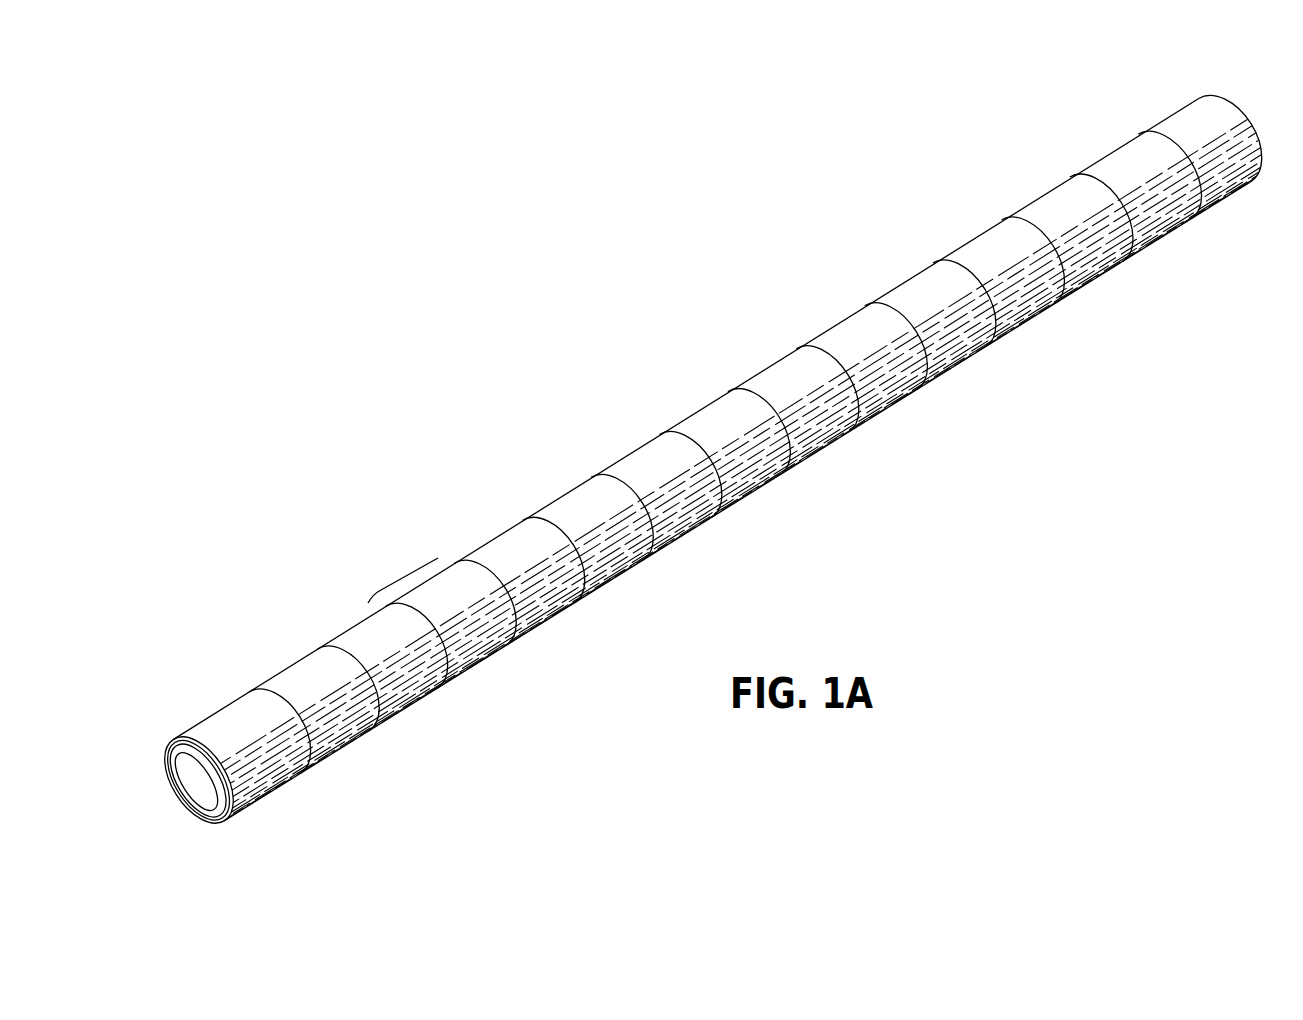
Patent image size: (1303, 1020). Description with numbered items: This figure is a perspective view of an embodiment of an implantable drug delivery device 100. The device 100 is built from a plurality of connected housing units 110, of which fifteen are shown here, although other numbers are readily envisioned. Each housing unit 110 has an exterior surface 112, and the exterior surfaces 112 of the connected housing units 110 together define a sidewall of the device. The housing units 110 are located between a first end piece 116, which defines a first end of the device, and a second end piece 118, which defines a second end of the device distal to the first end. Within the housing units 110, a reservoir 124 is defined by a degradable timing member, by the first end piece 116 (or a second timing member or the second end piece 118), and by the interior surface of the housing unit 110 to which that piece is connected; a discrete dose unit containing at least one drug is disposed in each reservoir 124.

The drug delivery device 100 is at (470, 375).
The housing unit 110 is at (543, 627).
The exterior surface 112 is at (577, 506).
The first end piece 116 is at (184, 806).
The second end piece 118 is at (1250, 116).
The reservoir 124 is at (404, 580).